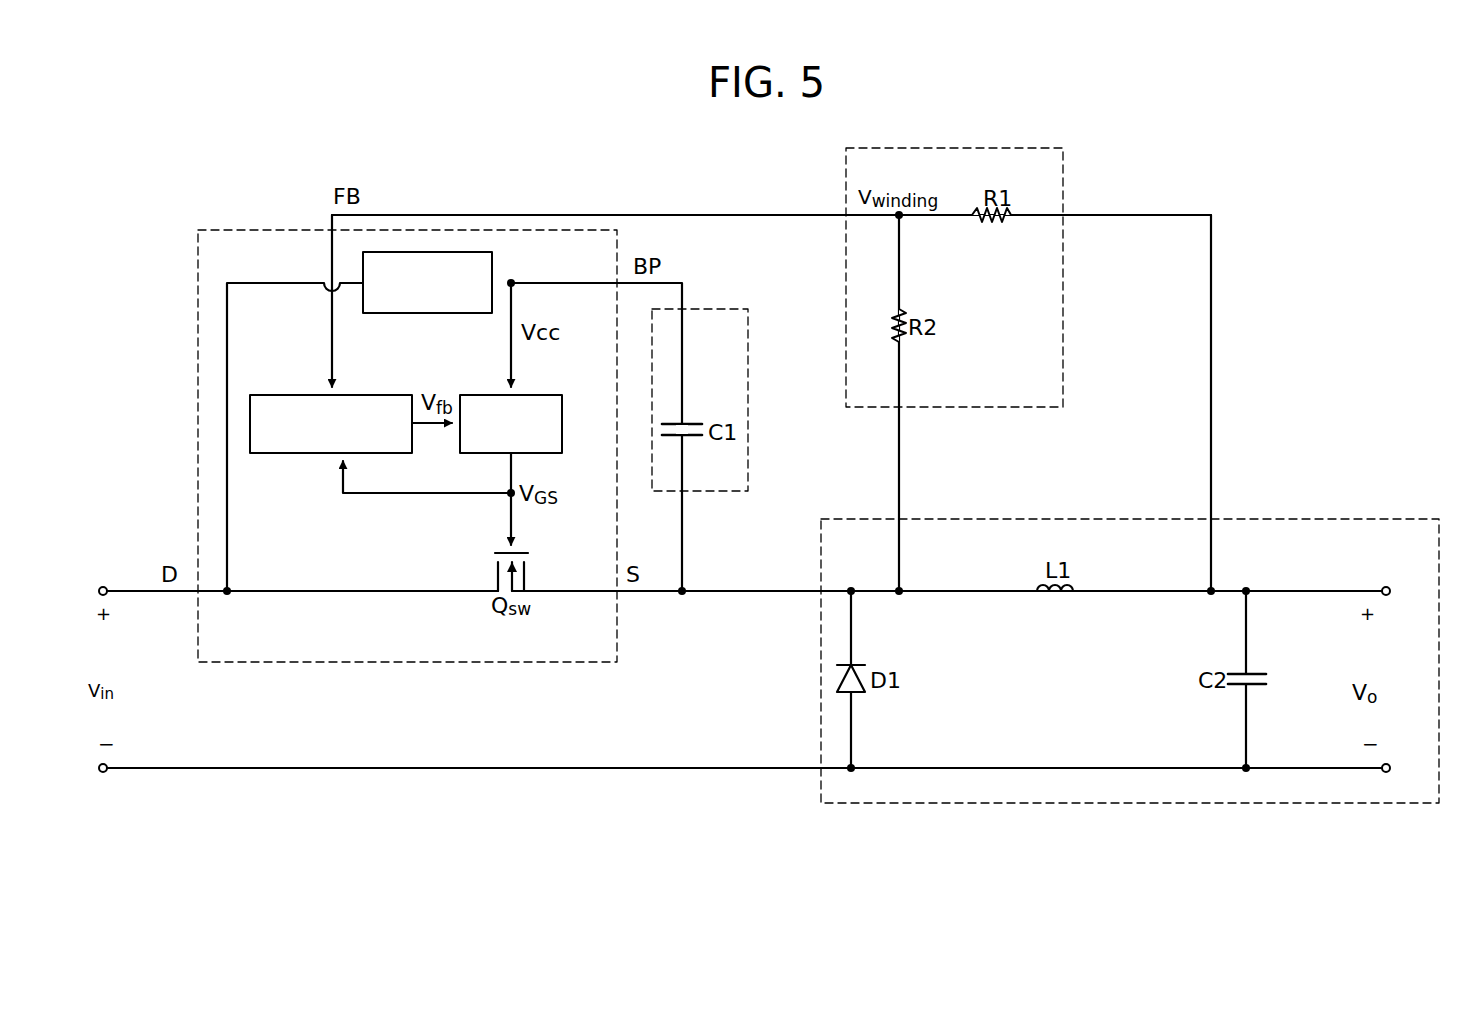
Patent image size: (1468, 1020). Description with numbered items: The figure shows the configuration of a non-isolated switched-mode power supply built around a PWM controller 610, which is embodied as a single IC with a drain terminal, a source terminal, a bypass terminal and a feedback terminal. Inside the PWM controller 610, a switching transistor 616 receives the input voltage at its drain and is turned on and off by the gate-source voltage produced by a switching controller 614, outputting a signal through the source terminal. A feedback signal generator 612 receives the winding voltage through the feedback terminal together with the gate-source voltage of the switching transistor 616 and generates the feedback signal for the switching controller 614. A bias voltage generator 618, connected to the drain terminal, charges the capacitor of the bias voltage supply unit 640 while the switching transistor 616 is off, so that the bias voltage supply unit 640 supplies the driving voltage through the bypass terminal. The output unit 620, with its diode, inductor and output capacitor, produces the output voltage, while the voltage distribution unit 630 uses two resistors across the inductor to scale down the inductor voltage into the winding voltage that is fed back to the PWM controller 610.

The pulse width modulation (PWM) controller 610 is at (198, 405).
The feedback signal generator 612 is at (319, 453).
The switching controller 614 is at (562, 424).
The switching transistor 616 is at (487, 598).
The bias voltage generator 618 is at (470, 313).
The output unit 620 is at (1258, 519).
The voltage distribution unit 630 is at (1002, 148).
The bias voltage supply unit 640 is at (722, 309).